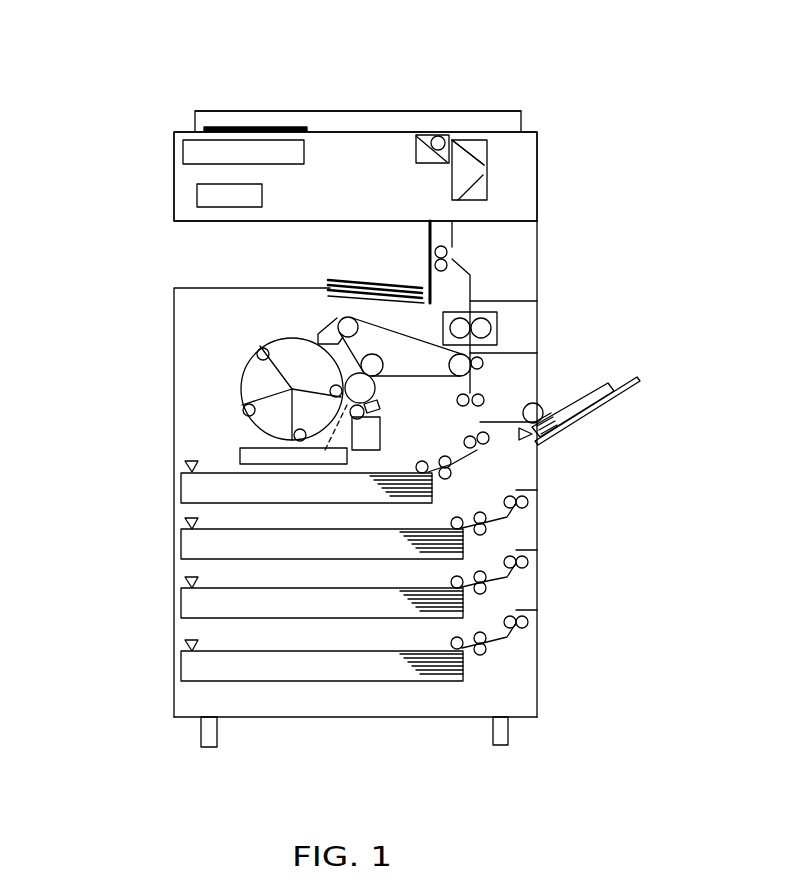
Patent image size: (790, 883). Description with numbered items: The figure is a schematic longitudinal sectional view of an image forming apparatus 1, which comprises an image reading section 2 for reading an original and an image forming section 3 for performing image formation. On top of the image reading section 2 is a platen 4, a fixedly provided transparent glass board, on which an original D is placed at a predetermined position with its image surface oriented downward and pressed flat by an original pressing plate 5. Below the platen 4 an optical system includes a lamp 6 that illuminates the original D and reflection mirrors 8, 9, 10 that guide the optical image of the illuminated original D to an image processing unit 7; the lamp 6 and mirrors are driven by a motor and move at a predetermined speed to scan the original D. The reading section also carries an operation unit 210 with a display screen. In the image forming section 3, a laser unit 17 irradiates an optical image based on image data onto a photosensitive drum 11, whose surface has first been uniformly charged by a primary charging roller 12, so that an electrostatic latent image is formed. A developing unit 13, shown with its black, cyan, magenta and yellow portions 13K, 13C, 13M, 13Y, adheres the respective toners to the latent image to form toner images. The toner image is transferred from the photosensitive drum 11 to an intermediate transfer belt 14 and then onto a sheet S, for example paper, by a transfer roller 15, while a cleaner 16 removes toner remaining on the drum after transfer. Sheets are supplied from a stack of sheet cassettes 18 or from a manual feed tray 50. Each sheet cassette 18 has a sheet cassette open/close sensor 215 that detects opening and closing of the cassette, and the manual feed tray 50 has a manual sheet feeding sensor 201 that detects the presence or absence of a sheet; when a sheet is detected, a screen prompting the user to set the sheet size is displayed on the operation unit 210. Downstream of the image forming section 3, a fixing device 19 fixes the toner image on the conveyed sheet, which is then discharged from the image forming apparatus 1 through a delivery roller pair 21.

The image forming apparatus 1 is at (533, 120).
The image reading section 2 is at (174, 137).
The image forming section 3 is at (174, 327).
The platen 4 is at (382, 131).
The original pressing plate 5 is at (279, 111).
The lamp 6 is at (438, 136).
The image processing unit 7 is at (197, 196).
The reflection mirror 8 is at (416, 160).
The reflection mirror 9 is at (537, 153).
The reflection mirror 10 is at (487, 193).
The original D is at (218, 128).
The sheet S is at (305, 283).
The photosensitive drum 11 is at (362, 385).
The primary charging roller 12 is at (372, 430).
The developing unit 13 is at (268, 352).
The black developing portion of developing unit 13K is at (302, 365).
The cyan developing portion of developing unit 13C is at (260, 387).
The magenta developing portion of developing unit 13M is at (262, 422).
The yellow developing portion of developing unit 13Y is at (267, 440).
The intermediate transfer belt 14 is at (417, 316).
The transfer roller 15 is at (484, 364).
The cleaner 16 is at (366, 409).
The laser unit 17 is at (240, 456).
The sheet cassette 18 is at (181, 493).
The fixing device 19 is at (497, 320).
The delivery roller pair 21 is at (447, 251).
The manual feed tray 50 is at (642, 378).
The manual sheet feeding sensor 201 is at (527, 445).
The operation unit 210 is at (183, 152).
The sheet cassette open/close sensor 215 is at (181, 473).